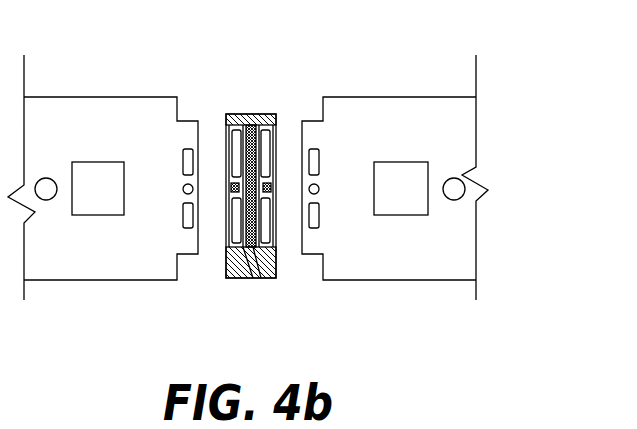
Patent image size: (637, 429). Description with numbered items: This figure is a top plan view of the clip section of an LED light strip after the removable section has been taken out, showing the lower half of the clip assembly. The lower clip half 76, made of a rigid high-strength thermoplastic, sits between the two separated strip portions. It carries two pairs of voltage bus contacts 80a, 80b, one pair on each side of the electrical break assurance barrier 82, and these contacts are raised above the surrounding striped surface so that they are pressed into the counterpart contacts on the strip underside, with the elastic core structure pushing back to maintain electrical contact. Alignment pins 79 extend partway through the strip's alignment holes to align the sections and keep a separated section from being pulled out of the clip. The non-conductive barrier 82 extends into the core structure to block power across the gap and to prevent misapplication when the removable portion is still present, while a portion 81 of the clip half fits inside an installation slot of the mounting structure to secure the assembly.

The lower clip half 76 is at (250, 125).
The alignment pins 79 is at (265, 133).
The voltage bus contact 80a is at (269, 238).
The voltage bus contact 80b is at (263, 184).
The portion 81 is at (245, 279).
The electrical break assurance barrier 82 is at (257, 279).